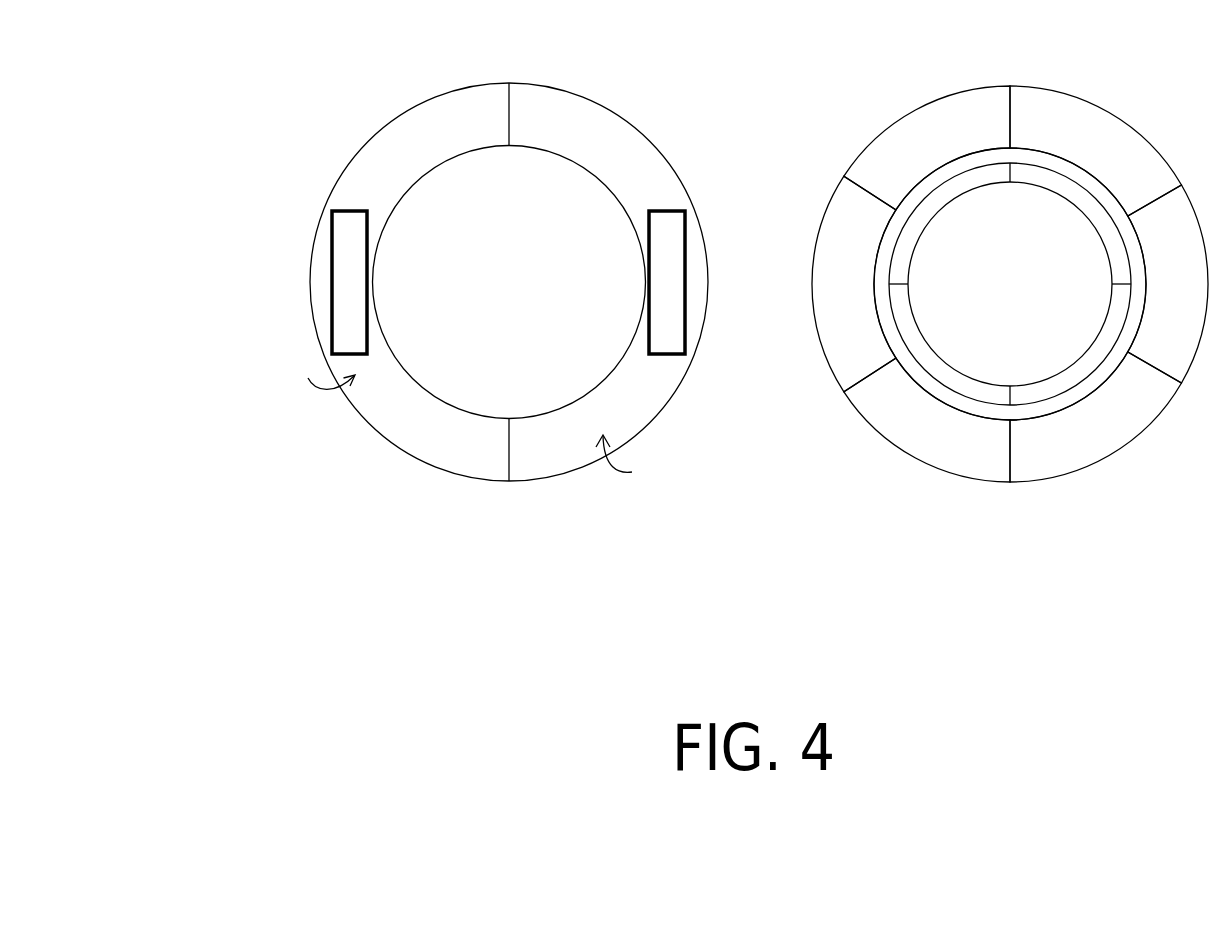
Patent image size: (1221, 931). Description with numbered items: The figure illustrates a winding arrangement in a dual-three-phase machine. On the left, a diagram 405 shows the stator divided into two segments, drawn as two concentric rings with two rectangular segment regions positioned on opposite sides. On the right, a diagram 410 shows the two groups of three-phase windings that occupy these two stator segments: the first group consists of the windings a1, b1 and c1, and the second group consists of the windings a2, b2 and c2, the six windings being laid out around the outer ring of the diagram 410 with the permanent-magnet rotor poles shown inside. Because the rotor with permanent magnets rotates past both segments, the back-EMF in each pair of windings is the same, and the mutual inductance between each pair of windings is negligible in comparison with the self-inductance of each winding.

The diagram 405 is at (537, 542).
The diagram 410 is at (1037, 542).
The winding a1 is at (1096, 151).
The winding b1 is at (1168, 284).
The winding c1 is at (1096, 417).
The winding a2 is at (927, 420).
The winding b2 is at (854, 284).
The winding c2 is at (927, 148).